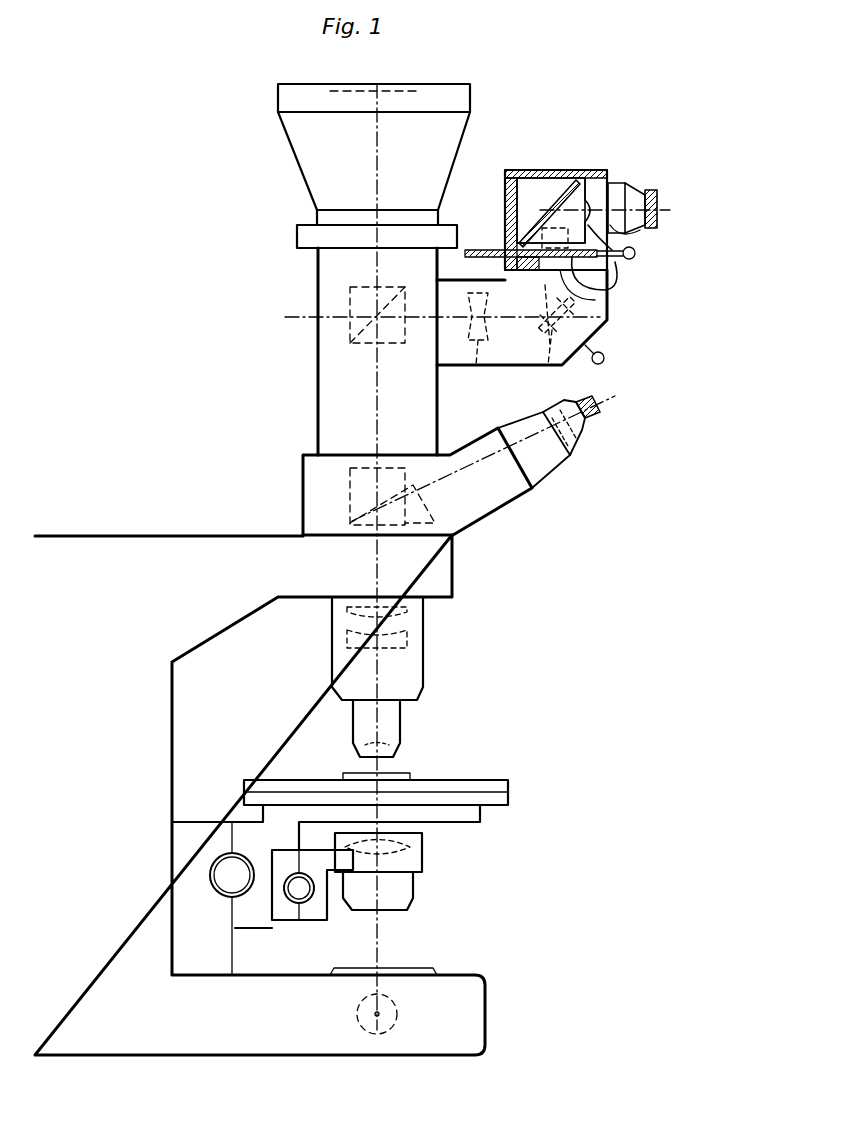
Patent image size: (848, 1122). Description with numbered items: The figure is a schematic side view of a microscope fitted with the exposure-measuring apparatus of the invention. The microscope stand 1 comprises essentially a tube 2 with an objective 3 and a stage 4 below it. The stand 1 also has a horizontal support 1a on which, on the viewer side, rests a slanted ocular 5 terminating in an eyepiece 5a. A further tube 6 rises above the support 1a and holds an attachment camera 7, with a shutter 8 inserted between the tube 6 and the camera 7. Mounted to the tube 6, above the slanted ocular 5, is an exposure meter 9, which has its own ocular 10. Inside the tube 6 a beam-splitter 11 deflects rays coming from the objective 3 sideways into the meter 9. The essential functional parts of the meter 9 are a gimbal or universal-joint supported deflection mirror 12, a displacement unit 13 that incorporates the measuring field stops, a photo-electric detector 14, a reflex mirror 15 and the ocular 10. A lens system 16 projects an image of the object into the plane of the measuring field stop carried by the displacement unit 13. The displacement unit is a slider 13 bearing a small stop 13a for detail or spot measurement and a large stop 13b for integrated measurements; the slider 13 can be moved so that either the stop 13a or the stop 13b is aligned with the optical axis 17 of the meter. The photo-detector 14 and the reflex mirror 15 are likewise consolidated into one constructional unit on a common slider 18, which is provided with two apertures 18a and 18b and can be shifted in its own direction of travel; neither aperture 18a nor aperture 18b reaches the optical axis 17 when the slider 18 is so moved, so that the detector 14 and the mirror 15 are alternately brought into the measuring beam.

The stand 1 is at (162, 570).
The horizontal support 1a is at (432, 562).
The tube 2 is at (412, 637).
The objective 3 is at (390, 722).
The stage 4 is at (505, 792).
The slanted ocular 5 is at (500, 495).
The eyepiece 5a is at (560, 455).
The further tube 6 is at (318, 392).
The attachment camera 7 is at (290, 100).
The shutter 8 is at (285, 238).
The exposure meter 9 is at (595, 324).
The ocular 10 is at (658, 200).
The beam-splitter 11 is at (429, 315).
The deflection mirror 12 is at (556, 347).
The displacement unit 13 is at (632, 258).
The small stop 13a is at (600, 280).
The large stop 13b is at (497, 250).
The photo-electric detector 14 is at (565, 228).
The reflex mirror 15 is at (556, 182).
The lens system 16 is at (476, 348).
The optical axis 17 is at (552, 296).
The common slider 18 is at (530, 180).
The aperture 18a is at (640, 230).
The aperture 18b is at (565, 240).